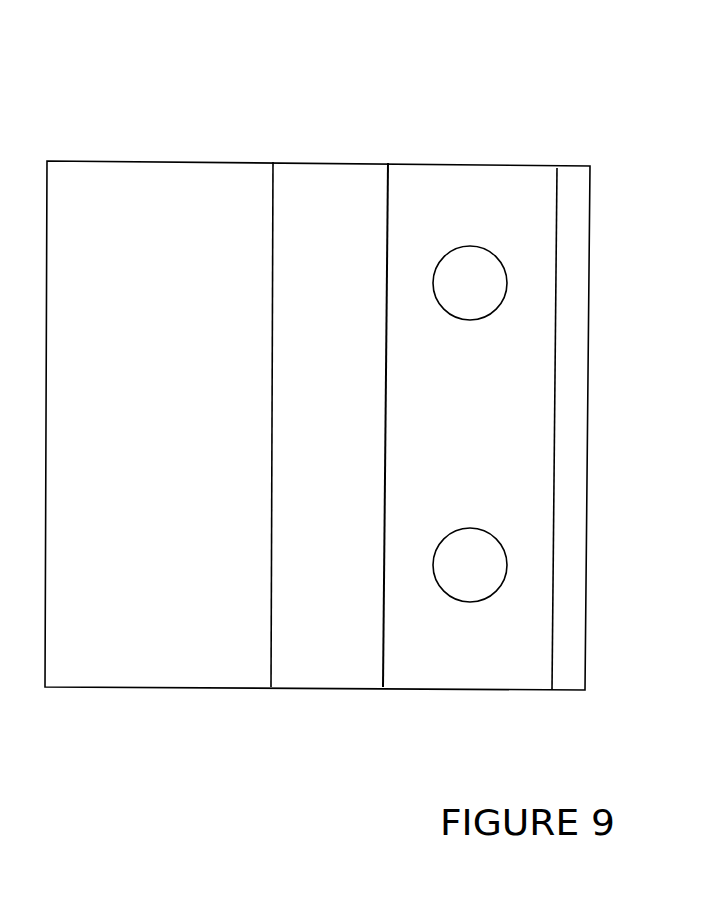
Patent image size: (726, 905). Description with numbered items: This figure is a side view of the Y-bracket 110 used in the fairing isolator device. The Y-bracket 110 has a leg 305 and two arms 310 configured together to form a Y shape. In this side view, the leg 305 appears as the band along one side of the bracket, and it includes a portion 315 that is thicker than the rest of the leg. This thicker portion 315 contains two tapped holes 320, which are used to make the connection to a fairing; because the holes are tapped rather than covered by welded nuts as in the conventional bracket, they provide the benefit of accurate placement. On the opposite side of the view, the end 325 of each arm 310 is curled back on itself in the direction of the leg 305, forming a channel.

The Y-bracket 110 is at (90, 54).
The leg 305 is at (593, 198).
The arm 310 is at (143, 690).
The portion 315 is at (477, 162).
The tapped holes 320 is at (507, 270).
The end 325 is at (277, 647).